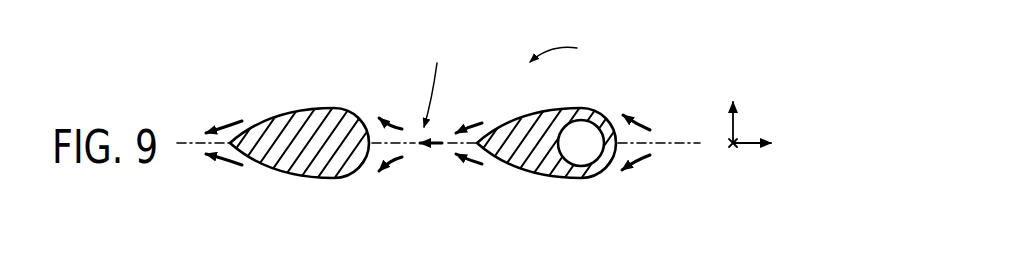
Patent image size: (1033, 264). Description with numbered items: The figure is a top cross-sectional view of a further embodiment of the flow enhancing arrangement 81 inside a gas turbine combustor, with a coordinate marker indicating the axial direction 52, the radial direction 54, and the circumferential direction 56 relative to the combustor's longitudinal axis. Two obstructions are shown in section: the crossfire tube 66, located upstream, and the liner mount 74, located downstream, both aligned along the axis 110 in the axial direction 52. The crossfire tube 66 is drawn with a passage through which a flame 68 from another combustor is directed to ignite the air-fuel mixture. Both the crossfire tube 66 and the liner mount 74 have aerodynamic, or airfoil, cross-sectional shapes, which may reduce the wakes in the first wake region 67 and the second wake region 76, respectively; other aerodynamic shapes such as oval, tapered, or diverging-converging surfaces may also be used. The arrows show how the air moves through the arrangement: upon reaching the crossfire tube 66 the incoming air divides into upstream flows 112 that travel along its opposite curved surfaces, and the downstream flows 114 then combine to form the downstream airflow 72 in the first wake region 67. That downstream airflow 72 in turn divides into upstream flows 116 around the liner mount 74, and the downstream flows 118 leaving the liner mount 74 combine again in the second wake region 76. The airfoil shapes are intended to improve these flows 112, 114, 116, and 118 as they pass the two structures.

The axial direction 52 is at (749, 141).
The radial direction 54 is at (733, 149).
The circumferential direction 56 is at (730, 139).
The crossfire tube 66 is at (580, 178).
The first wake region 67 is at (437, 82).
The flame 68 is at (585, 139).
The downstream airflow 72 is at (435, 149).
The liner mount 74 is at (337, 178).
The second wake region 76 is at (184, 110).
The flow enhancing arrangement 81 is at (565, 49).
The axis 110 is at (661, 144).
The upstream flows 112 is at (650, 130).
The downstream flows 114 is at (480, 124).
The upstream flows 116 is at (402, 128).
The downstream flows 118 is at (228, 126).